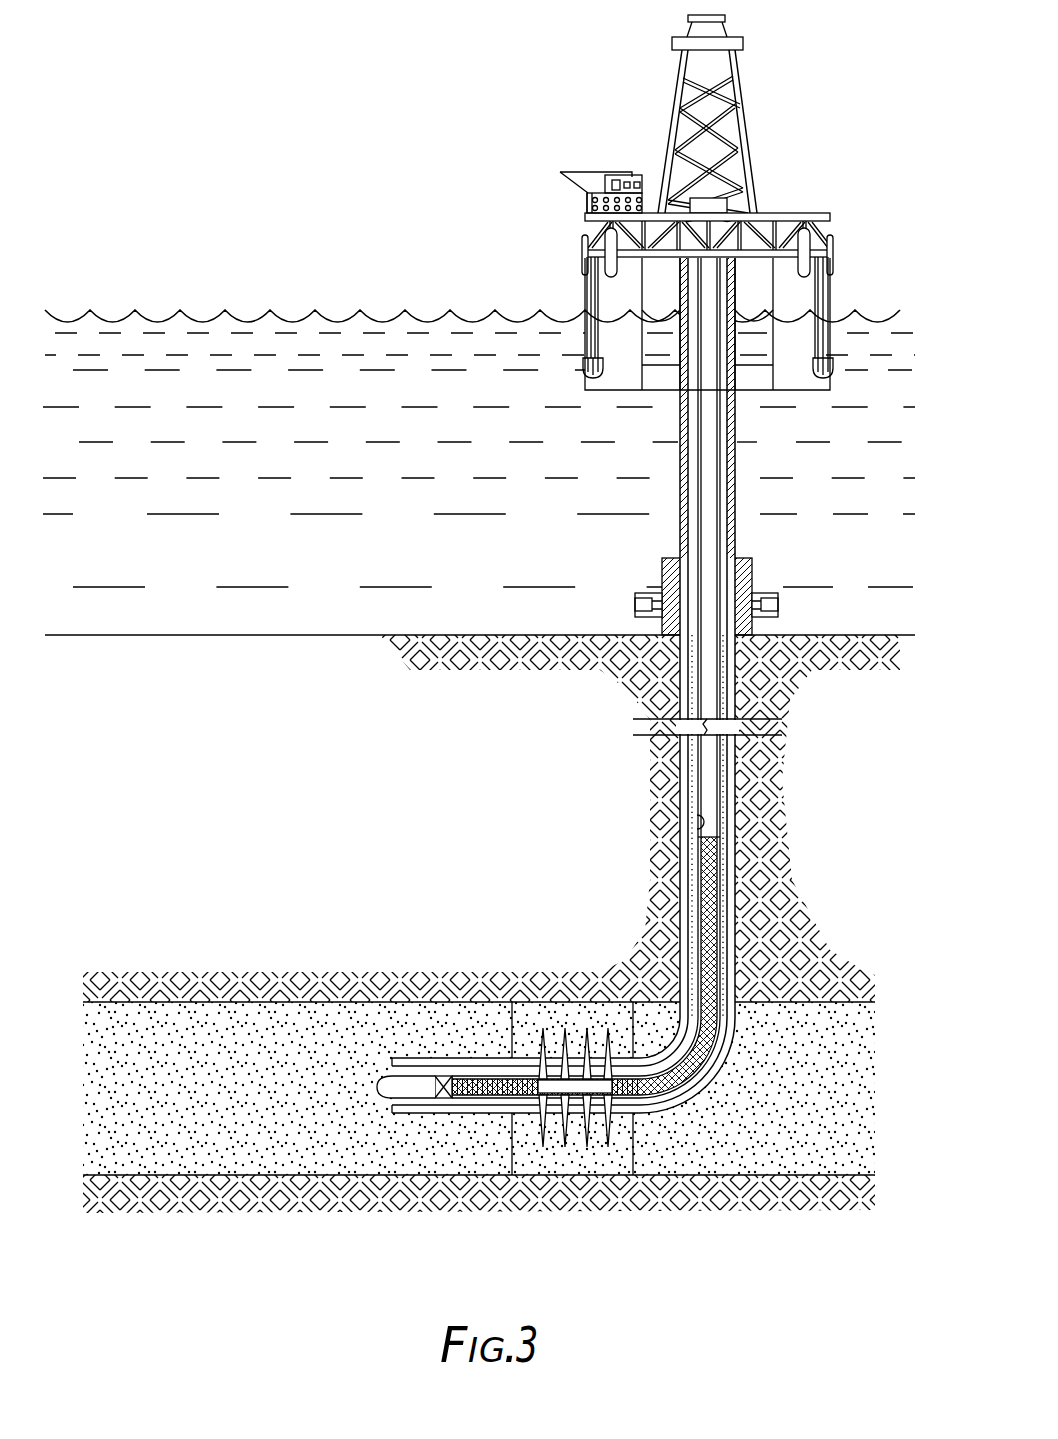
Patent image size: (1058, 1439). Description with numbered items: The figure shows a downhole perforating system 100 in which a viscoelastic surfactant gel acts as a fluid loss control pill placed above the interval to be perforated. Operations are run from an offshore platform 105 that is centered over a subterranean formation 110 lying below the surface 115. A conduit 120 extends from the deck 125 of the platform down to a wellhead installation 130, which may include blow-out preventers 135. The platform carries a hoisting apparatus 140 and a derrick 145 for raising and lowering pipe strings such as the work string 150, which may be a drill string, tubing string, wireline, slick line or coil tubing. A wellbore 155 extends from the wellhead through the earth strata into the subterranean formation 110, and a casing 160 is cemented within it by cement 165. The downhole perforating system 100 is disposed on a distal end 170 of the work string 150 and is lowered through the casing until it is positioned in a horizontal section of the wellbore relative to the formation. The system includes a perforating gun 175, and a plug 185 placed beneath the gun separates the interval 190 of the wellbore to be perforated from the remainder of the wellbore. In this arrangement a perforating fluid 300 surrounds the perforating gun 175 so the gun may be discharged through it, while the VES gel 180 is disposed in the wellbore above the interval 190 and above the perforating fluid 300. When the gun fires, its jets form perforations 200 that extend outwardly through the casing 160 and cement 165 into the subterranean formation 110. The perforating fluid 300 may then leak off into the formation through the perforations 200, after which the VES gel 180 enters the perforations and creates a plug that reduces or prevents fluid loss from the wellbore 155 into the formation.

The downhole perforating system 100 is at (503, 1027).
The platform 105 is at (832, 218).
The subterranean formation 110 is at (858, 1100).
The surface 115 is at (137, 636).
The conduit 120 is at (682, 482).
The deck 125 is at (830, 258).
The wellhead installation 130 is at (752, 578).
The blow-out preventers 135 is at (780, 605).
The hoisting apparatus 140 is at (713, 193).
The derrick 145 is at (735, 72).
The work string 150 is at (710, 490).
The wellbore 155 is at (735, 755).
The casing 160 is at (697, 822).
The cement 165 is at (727, 777).
The distal end 170 is at (708, 803).
The perforating gun 175 is at (598, 1092).
The VES gel 180 is at (715, 883).
The plug 185 is at (437, 1087).
The interval 190 is at (535, 1022).
The perforations 200 is at (535, 1268).
The perforating fluid 300 is at (678, 1093).